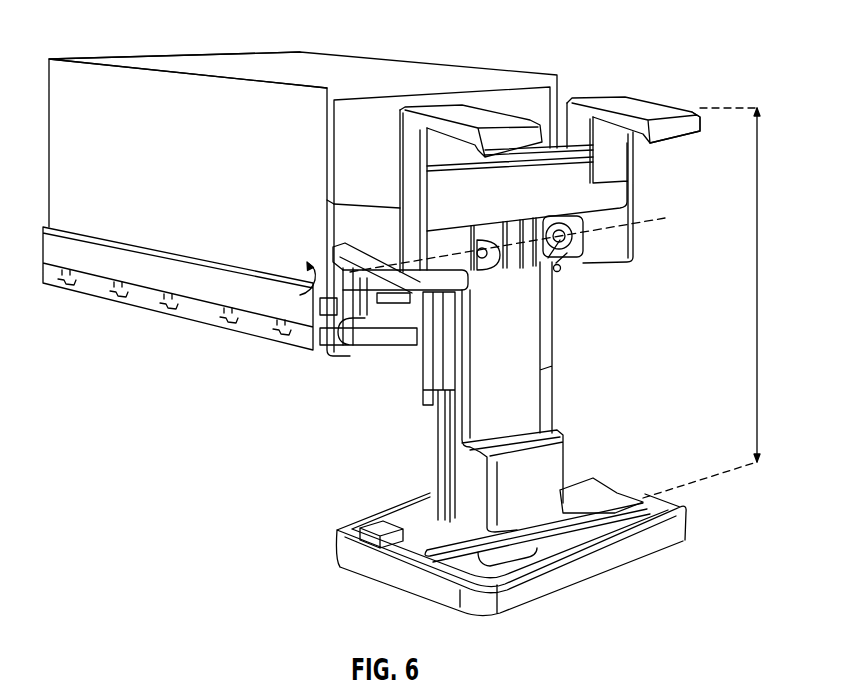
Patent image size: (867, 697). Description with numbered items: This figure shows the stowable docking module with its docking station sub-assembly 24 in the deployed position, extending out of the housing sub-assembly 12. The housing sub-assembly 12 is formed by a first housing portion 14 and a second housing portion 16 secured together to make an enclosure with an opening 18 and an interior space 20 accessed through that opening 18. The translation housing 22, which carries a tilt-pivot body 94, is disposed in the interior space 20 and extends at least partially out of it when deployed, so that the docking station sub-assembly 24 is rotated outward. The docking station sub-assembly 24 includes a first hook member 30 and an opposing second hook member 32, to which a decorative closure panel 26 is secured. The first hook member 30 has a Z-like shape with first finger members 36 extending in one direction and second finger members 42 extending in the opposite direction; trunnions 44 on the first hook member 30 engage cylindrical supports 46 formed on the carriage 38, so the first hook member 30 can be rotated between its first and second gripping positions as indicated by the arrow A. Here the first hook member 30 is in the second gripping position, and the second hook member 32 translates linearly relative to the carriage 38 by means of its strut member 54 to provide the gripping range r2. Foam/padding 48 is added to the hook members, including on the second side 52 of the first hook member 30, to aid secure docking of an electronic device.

The housing sub-assembly 12 is at (303, 52).
The first housing portion 14 is at (235, 65).
The second housing portion 16 is at (148, 308).
The opening 18 is at (538, 100).
The interior space 20 is at (350, 118).
The translation housing 22 is at (353, 218).
The docking station sub-assembly 24 is at (615, 82).
The decorative closure panel 26 is at (567, 590).
The first hook member 30 is at (623, 95).
The second hook member 32 is at (603, 525).
The first finger members 36 is at (337, 250).
The carriage 38 is at (428, 358).
The second finger members 42 is at (670, 110).
The trunnions 44 is at (567, 253).
The cylindrical supports 46 is at (577, 240).
The foam/padding 48 is at (450, 180).
The second side 52 is at (450, 270).
The strut member 54 is at (543, 433).
The tilt-pivot body 94 is at (320, 328).